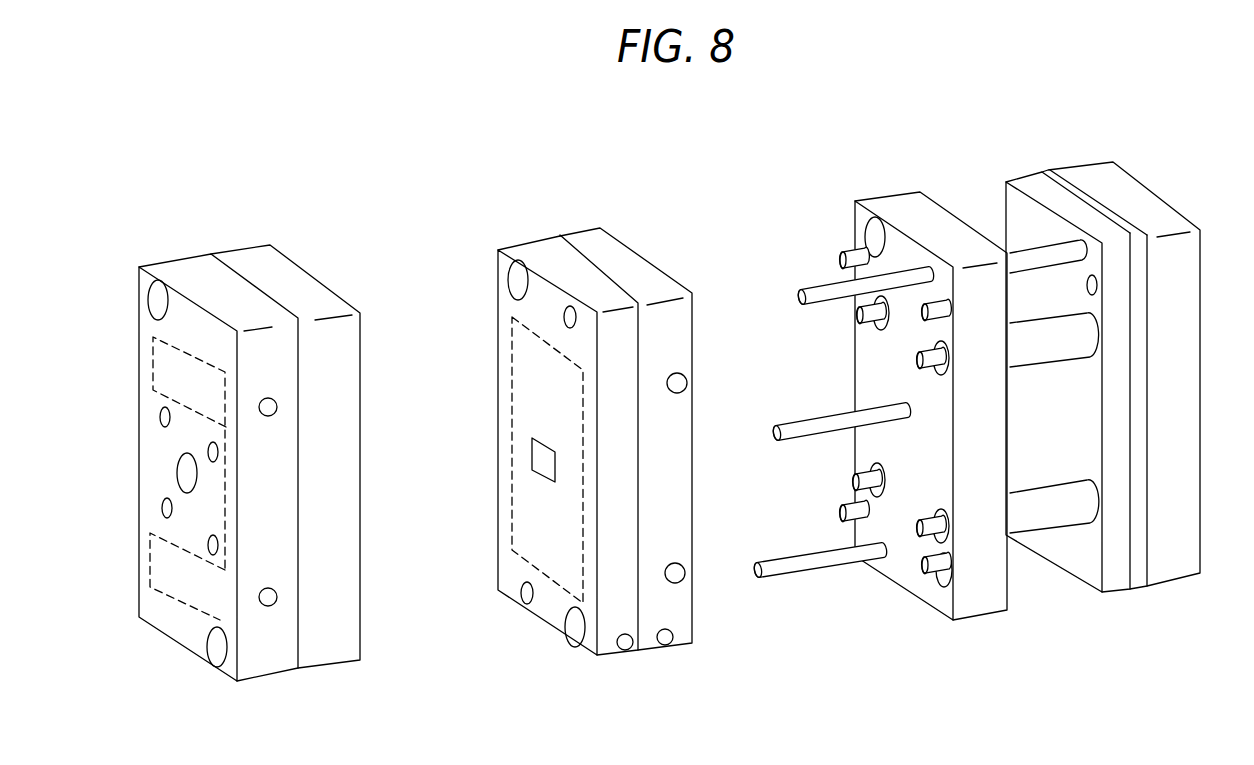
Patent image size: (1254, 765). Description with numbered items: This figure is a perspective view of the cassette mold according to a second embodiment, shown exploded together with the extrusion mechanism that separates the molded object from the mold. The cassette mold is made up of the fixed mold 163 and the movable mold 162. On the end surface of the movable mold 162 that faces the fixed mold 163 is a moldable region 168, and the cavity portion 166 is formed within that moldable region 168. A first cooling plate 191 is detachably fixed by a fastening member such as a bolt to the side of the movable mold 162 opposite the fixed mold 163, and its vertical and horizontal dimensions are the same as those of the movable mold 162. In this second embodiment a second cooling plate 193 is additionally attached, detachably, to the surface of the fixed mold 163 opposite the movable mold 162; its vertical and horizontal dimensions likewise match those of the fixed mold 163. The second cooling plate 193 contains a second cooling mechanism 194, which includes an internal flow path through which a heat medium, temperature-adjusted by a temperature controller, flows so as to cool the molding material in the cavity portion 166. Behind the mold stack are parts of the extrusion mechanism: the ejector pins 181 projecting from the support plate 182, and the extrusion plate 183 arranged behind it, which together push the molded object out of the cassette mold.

The movable mold 162 is at (547, 250).
The fixed mold 163 is at (242, 258).
The cavity portion 166 is at (542, 478).
The moldable region 168 is at (507, 407).
The ejector pin 181 is at (797, 423).
The support plate 182 is at (902, 207).
The extrusion plate 183 is at (1033, 182).
The first cooling plate 191 is at (597, 242).
The second cooling plate 193 is at (175, 267).
The second cooling mechanism 194 is at (168, 600).